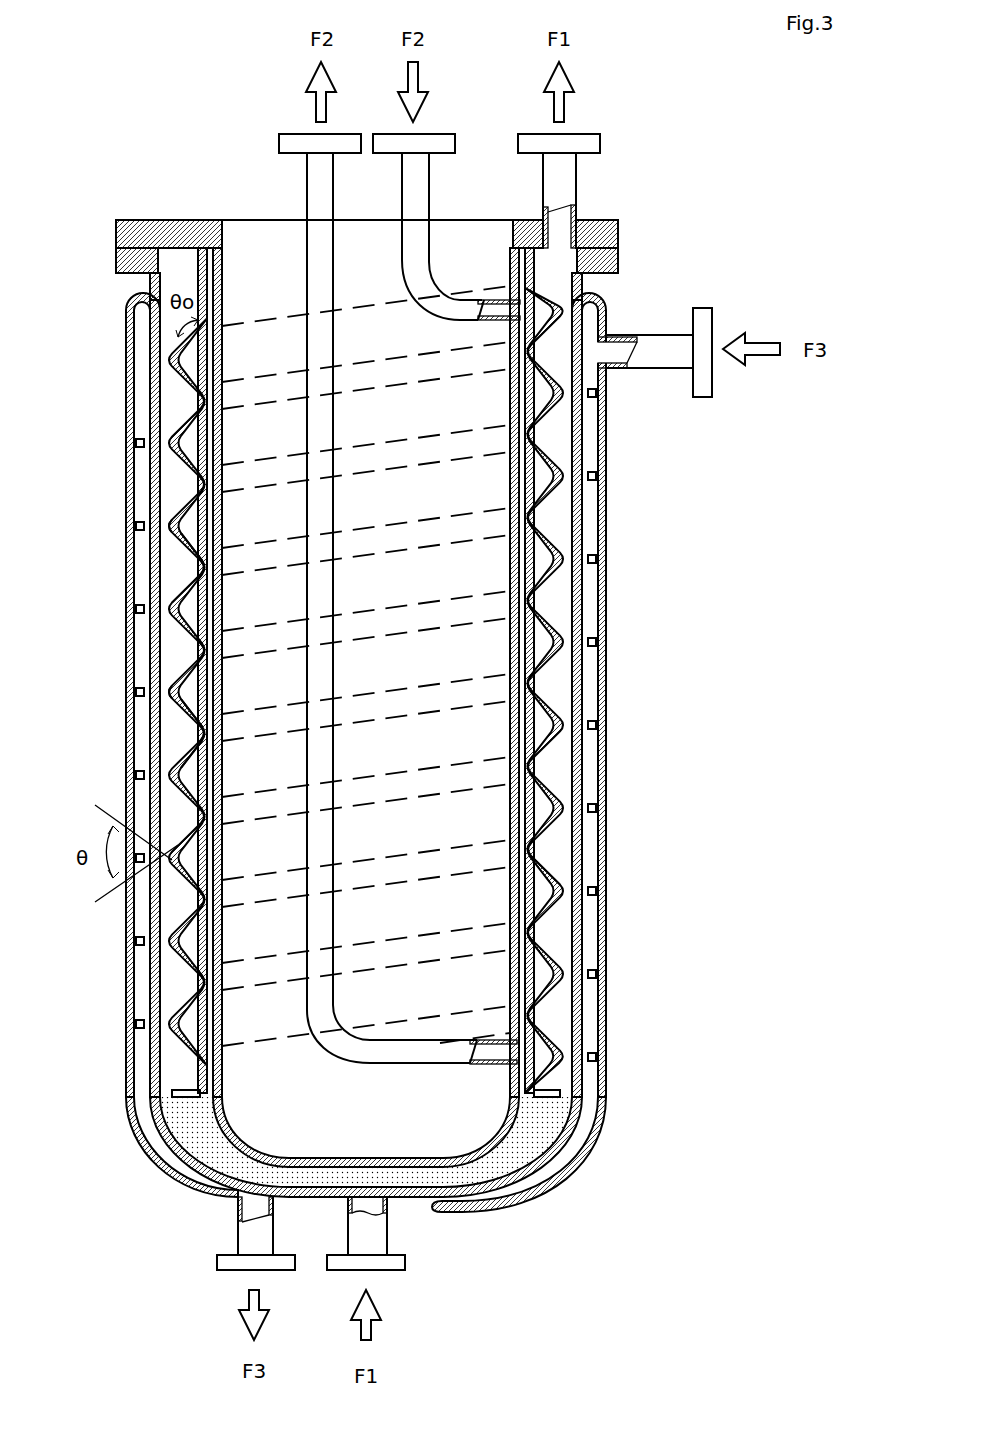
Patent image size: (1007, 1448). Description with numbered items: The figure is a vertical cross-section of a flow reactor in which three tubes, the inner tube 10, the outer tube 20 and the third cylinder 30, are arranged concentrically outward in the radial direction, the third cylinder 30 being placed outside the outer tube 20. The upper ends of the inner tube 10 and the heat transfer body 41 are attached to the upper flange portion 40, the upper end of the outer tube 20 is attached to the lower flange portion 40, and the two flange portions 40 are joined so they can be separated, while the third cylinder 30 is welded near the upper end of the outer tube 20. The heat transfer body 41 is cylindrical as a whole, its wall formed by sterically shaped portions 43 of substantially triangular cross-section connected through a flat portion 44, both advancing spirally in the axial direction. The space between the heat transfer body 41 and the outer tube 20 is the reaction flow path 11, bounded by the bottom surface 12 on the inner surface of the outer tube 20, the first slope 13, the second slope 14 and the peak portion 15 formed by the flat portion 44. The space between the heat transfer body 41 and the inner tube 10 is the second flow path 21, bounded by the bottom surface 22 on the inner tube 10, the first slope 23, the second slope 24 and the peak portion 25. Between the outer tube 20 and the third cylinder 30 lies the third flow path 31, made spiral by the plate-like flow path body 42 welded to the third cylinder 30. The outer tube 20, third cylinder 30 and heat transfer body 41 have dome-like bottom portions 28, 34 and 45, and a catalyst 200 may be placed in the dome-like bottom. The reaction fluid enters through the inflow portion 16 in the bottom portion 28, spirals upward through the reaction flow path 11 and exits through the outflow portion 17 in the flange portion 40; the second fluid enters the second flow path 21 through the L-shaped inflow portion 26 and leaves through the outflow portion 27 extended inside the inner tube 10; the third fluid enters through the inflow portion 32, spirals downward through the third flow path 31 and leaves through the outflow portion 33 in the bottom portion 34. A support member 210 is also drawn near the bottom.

The inner tube 10 is at (522, 480).
The reaction flow path 11 is at (185, 485).
The bottom surface 12 is at (167, 546).
The first slope 13 is at (190, 556).
The second slope 14 is at (160, 592).
The peak portion 15 is at (200, 567).
The inflow portion 16 is at (348, 1232).
The outflow portion 17 is at (578, 186).
The outer tube 20 is at (586, 508).
The second flow path 21 is at (538, 729).
The bottom surface 22 is at (204, 700).
The first slope 23 is at (182, 668).
The second slope 24 is at (208, 690).
The peak portion 25 is at (184, 692).
The inflow portion 26 is at (429, 196).
The outflow portion 27 is at (307, 185).
The bottom portion 28 is at (540, 1185).
The third cylinder 30 is at (407, 752).
The third flow path 31 is at (592, 793).
The inflow portion 32 is at (660, 335).
The outflow portion 33 is at (240, 1232).
The bottom portion 34 is at (590, 1160).
The flange portion 40 is at (122, 220).
The heat transfer body 41 is at (556, 577).
The flow path body 42 is at (600, 630).
The sterically shaped portion 43 is at (560, 867).
The flat portion 44 is at (530, 845).
The bottom portion 45 is at (470, 1178).
The catalyst for reaction 200 is at (577, 1105).
The support member 210 is at (560, 1095).